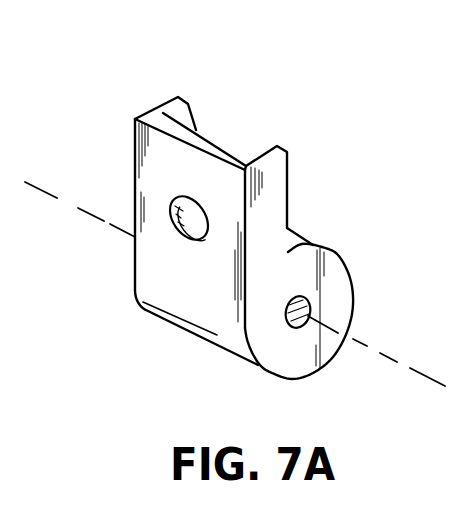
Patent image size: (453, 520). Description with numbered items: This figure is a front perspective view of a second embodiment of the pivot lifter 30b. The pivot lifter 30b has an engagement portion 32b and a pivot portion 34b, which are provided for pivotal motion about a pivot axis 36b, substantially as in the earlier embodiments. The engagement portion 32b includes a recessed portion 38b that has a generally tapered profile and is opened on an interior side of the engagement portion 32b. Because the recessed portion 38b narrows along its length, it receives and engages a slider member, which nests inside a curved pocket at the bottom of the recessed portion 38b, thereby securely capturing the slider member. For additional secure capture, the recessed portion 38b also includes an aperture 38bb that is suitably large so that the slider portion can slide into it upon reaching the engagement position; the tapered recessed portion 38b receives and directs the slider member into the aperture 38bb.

The pivot lifter 30b is at (235, 218).
The engagement portion 32b is at (157, 242).
The pivot portion 34b is at (345, 296).
The pivot axis 36b is at (355, 340).
The recessed portion 38b is at (247, 137).
The aperture 38bb is at (177, 221).